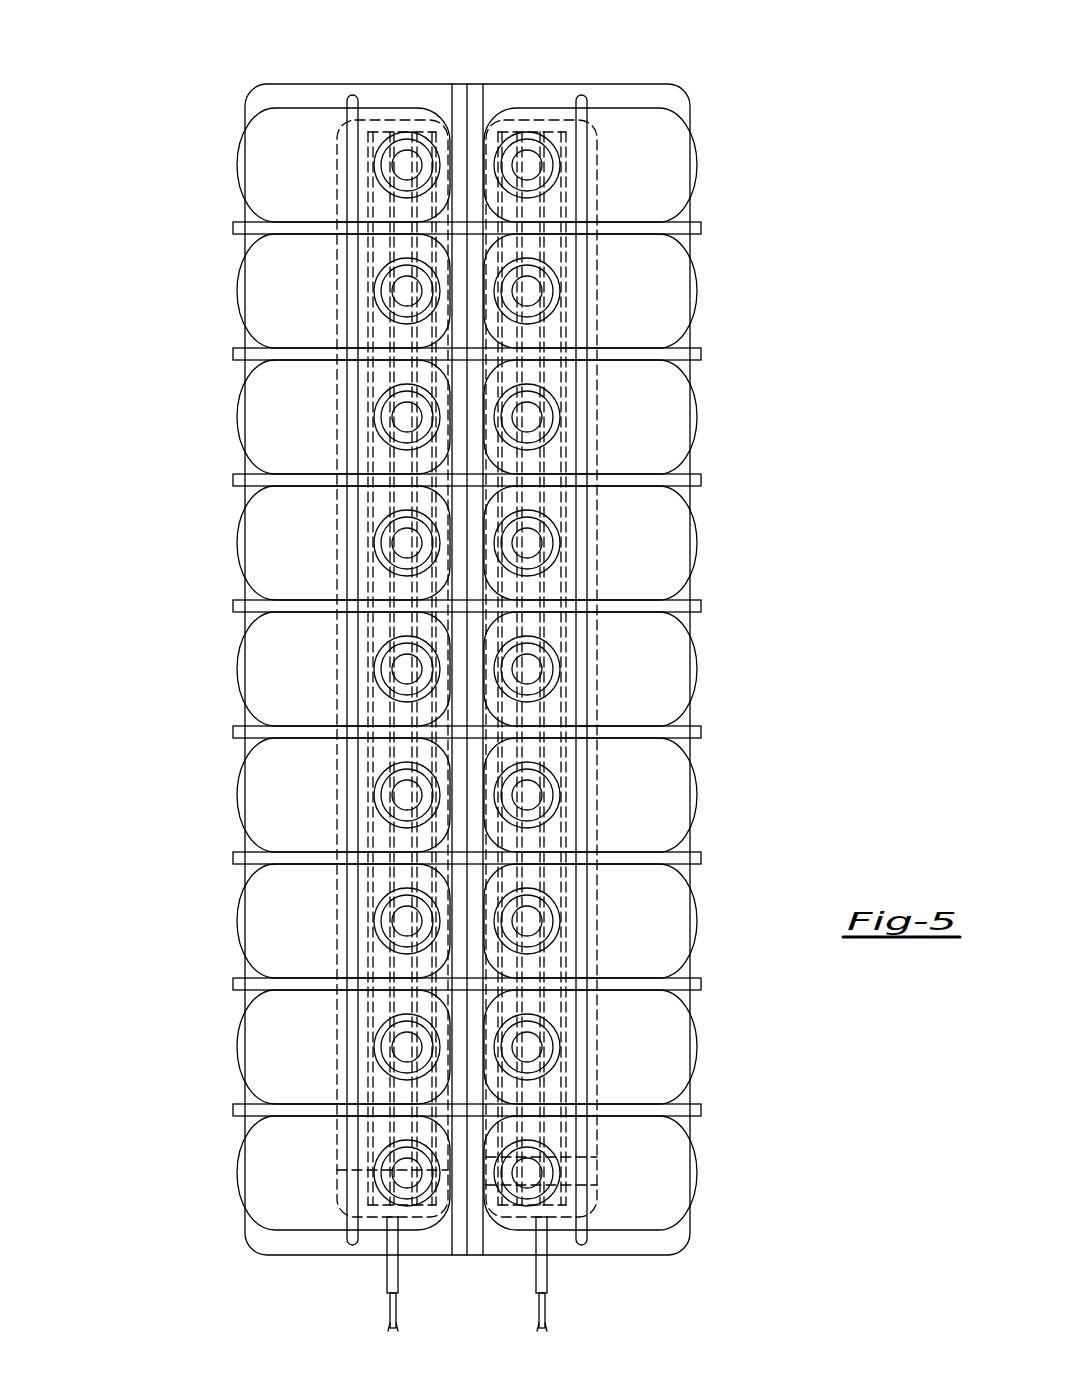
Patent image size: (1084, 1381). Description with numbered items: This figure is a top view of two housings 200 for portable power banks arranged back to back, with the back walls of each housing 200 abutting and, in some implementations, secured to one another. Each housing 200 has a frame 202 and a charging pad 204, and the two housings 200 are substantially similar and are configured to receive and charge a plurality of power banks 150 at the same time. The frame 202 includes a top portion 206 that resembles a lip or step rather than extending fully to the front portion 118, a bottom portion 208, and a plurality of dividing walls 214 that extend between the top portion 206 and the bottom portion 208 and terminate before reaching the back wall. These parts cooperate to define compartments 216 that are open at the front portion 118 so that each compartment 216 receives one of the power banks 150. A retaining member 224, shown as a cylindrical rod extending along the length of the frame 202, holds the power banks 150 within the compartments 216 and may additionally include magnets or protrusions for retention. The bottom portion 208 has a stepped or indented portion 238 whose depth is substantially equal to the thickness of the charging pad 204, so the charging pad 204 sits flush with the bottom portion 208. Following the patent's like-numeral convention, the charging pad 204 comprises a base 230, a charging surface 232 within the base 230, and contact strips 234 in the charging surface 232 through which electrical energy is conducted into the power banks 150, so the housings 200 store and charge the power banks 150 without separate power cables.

The housing 200 is at (136, 186).
The front portion 118 is at (192, 445).
The frame 202 is at (236, 112).
The bottom portion 208 is at (305, 92).
The top portion 206 is at (483, 1250).
The power bank 150 is at (270, 168).
The compartment 216 is at (468, 670).
The retaining member 224 is at (352, 93).
The charging pad 204 is at (328, 798).
The dividing wall 214 is at (310, 234).
The fastener 234 is at (337, 1027).
The bus bar 230 is at (337, 1170).
The conductor 232 is at (597, 1185).
The indented portion 238 is at (388, 1275).